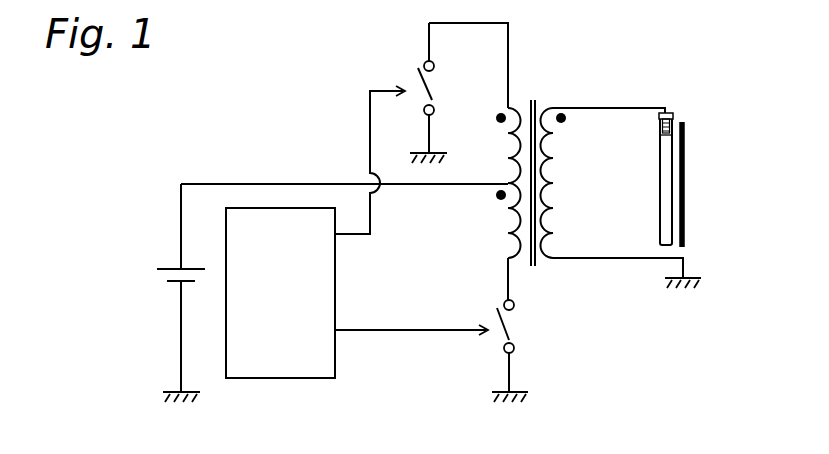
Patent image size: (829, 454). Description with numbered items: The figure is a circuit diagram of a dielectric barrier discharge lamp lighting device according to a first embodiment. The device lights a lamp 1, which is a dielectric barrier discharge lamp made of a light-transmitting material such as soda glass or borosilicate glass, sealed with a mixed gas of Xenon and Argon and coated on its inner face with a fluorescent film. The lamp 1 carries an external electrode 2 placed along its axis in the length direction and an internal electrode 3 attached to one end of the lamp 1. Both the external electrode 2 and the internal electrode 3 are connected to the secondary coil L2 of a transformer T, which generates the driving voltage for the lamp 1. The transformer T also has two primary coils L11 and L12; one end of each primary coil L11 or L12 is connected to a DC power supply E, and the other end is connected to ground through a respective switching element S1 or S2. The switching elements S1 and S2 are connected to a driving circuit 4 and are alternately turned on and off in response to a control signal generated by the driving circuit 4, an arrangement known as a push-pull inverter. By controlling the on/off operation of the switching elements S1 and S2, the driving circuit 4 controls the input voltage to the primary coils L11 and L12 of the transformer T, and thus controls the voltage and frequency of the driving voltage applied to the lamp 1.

The lamp 1 is at (660, 195).
The external electrode 2 is at (673, 122).
The internal electrode 3 is at (688, 167).
The driving circuit 4 is at (293, 378).
The DC power supply E is at (166, 293).
The transformer T is at (540, 102).
The primary coil L11 is at (489, 145).
The primary coil L12 is at (489, 220).
The secondary coil L2 is at (570, 183).
The switching element S1 is at (442, 93).
The switching element S2 is at (526, 351).